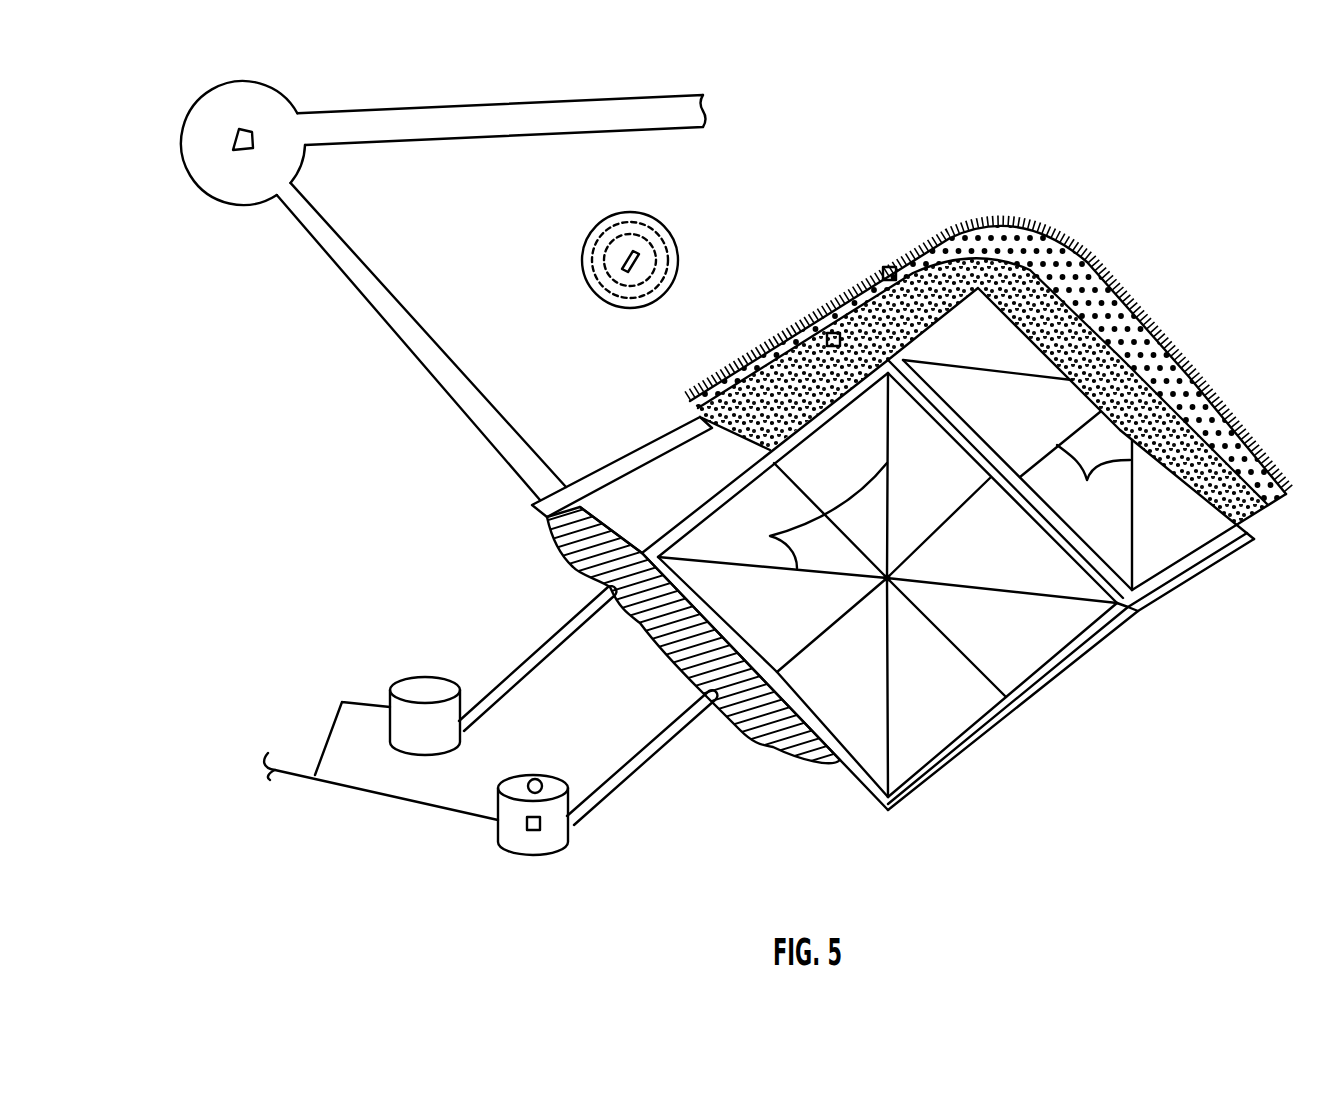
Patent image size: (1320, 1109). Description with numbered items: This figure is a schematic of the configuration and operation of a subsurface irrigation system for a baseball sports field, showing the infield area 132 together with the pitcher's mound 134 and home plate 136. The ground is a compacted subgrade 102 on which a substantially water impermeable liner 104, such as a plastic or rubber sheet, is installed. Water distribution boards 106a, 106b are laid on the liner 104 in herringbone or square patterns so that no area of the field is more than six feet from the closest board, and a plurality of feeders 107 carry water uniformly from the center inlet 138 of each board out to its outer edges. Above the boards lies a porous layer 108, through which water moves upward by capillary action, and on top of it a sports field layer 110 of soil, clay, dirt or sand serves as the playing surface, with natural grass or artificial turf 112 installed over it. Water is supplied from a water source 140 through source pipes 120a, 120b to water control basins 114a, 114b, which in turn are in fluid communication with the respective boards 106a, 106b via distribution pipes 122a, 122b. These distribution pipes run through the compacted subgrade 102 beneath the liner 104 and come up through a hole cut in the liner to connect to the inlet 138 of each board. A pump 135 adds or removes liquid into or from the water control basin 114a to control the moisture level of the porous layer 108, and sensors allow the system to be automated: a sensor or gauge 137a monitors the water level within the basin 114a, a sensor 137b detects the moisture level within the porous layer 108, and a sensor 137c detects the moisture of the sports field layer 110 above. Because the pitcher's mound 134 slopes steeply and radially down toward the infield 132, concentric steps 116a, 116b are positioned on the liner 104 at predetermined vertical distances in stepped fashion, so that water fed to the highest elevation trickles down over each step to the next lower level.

The compacted subgrade 102 is at (768, 748).
The liner 104 is at (648, 492).
The water distribution board 106a is at (1092, 612).
The water distribution board 106b is at (1188, 532).
The feeders 107 is at (780, 535).
The porous layer 108 is at (1137, 403).
The sports field layer 110 is at (1108, 295).
The natural grass or artificial turf 112 is at (972, 226).
The water control basin 114a is at (510, 850).
The water control basin 114b is at (423, 675).
The concentric step 116a is at (613, 242).
The concentric step 116b is at (598, 280).
The source pipe 120a is at (423, 802).
The source pipe 120b is at (337, 717).
The distribution pipe 122a is at (636, 768).
The distribution pipe 122b is at (538, 668).
The infield area 132 is at (655, 193).
The pitcher's mound 134 is at (665, 242).
The pump 135 is at (540, 780).
The home plate 136 is at (233, 138).
The sensor 137a is at (542, 822).
The sensor 137b is at (830, 333).
The sensor 137c is at (887, 267).
The inlet 138 is at (890, 575).
The water source 140 is at (238, 767).